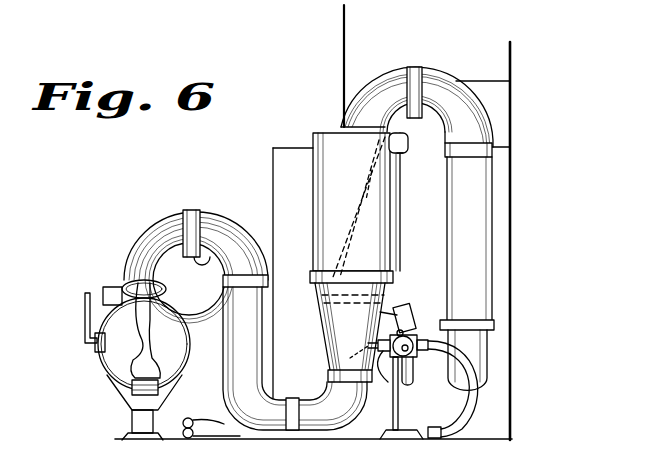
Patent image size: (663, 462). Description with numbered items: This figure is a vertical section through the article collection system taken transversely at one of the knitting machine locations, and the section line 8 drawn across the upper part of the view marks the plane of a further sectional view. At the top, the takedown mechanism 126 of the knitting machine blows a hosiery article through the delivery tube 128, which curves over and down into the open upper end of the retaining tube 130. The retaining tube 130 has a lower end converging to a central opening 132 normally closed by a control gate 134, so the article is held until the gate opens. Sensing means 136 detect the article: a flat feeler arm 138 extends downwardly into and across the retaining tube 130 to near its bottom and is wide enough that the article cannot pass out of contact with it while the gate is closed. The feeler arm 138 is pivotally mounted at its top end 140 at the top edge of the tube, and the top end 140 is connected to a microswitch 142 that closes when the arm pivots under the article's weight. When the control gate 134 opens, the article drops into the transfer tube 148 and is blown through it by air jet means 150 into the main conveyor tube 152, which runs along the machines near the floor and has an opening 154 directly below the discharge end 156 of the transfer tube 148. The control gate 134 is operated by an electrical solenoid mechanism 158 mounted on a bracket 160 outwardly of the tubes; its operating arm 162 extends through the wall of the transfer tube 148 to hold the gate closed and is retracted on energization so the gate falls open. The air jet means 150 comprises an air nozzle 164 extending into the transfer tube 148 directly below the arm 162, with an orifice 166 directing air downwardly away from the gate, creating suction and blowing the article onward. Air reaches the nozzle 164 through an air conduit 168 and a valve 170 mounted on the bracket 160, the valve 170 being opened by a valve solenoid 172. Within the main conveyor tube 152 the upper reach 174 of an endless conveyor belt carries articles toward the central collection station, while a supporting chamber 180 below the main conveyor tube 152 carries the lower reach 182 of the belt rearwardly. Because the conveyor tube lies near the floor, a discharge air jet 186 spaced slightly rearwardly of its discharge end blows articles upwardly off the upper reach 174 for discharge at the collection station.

The section line 8- 8 is at (320, 128).
The takedown mechanism 126 is at (487, 365).
The delivery tube 128 is at (480, 222).
The retaining tube 130 is at (313, 202).
The central opening 132 is at (336, 129).
The control gate 134 is at (324, 329).
The sensing means 136 is at (372, 171).
The feeler arm 138 is at (358, 218).
The top end of feeler arm 140 is at (397, 130).
The microswitch 142 is at (404, 152).
The transfer tube 148 is at (232, 228).
The air jet means 150 is at (411, 382).
The main conveyor tube 152 is at (103, 358).
The opening of main conveyor tube 154 is at (122, 288).
The discharge end of transfer tube 156 is at (130, 278).
The electrical solenoid mechanism 158 is at (399, 310).
The bracket 160 is at (399, 402).
The operating arm 162 is at (390, 311).
The air nozzle 164 is at (349, 358).
The orifice 166 is at (380, 343).
The air conduit 168 is at (462, 411).
The valve 170 is at (412, 332).
The valve solenoid 172 is at (412, 358).
The upper reach of conveyor belt 174 is at (126, 374).
The supporting chamber 180 is at (110, 390).
The lower reach of conveyor belt 182 is at (138, 400).
The discharge air jet 186 is at (94, 346).